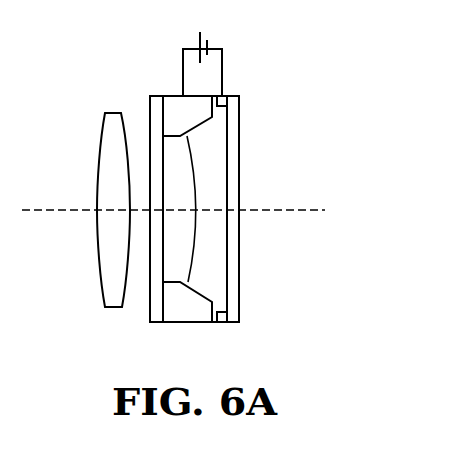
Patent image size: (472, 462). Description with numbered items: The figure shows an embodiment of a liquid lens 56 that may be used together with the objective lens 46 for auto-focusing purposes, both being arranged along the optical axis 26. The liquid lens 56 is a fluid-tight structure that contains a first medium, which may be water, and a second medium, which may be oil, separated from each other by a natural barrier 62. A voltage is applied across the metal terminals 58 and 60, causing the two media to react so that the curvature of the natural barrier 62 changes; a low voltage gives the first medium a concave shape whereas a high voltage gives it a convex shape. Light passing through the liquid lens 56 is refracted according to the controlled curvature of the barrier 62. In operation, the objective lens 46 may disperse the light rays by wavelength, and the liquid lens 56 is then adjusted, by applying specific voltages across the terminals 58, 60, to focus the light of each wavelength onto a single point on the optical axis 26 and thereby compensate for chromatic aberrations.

The optical axis 26 is at (305, 208).
The objective lens 46 is at (97, 163).
The liquid lens 56 is at (239, 164).
The metal terminal 58 is at (175, 108).
The metal terminal 60 is at (227, 97).
The natural barrier 62 is at (195, 163).